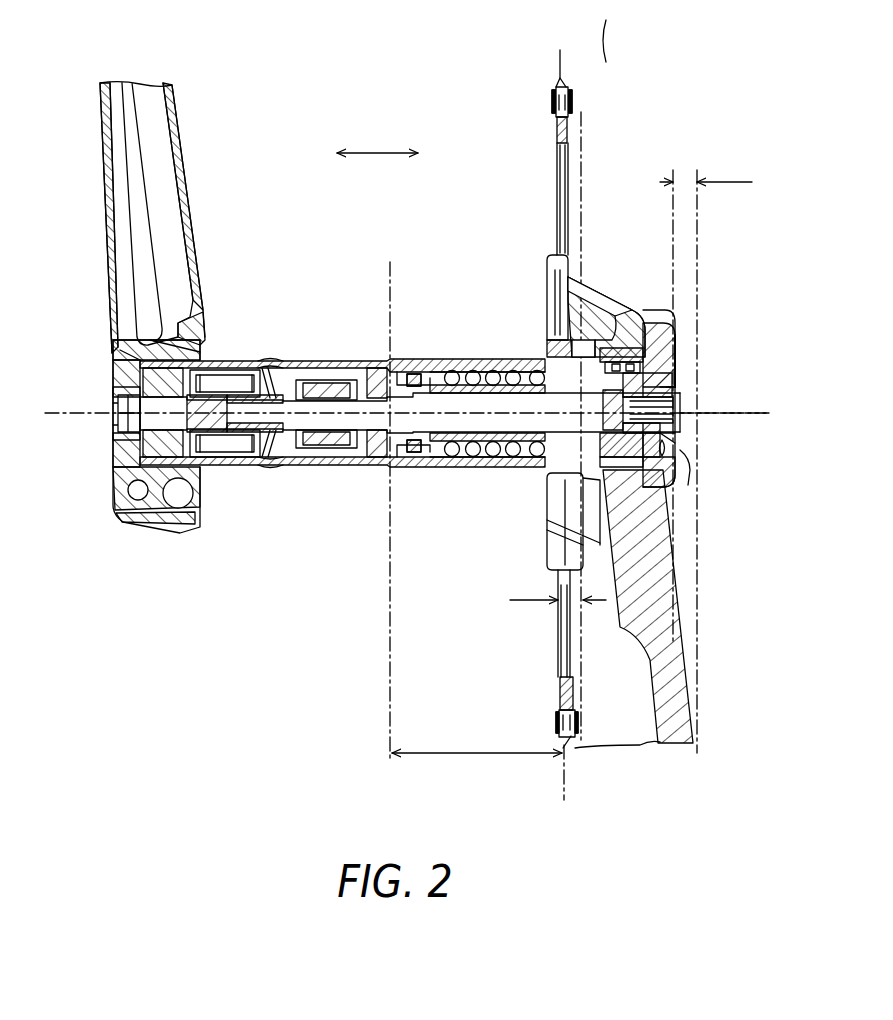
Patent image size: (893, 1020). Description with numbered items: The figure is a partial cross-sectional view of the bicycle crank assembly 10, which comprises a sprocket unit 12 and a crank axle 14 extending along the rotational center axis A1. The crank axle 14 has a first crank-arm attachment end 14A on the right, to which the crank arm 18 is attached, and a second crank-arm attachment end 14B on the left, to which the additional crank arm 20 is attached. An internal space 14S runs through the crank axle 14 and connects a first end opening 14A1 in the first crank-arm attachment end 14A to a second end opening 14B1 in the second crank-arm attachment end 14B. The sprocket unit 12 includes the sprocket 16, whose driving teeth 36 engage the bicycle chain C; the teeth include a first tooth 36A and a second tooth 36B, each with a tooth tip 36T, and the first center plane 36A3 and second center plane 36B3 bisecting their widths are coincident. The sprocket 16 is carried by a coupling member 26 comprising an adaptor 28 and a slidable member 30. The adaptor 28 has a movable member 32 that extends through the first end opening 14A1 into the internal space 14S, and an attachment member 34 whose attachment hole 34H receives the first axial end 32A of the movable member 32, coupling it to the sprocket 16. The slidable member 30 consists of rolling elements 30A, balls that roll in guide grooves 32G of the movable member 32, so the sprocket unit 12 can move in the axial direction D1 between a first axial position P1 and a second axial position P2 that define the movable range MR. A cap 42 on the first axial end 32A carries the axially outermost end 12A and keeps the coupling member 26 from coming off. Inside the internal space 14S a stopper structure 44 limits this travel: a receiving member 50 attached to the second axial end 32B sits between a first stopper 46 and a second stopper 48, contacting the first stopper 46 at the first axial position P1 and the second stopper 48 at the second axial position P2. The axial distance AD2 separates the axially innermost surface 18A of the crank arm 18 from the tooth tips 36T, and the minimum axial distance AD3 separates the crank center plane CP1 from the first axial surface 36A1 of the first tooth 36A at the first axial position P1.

The bicycle crank assembly 10 is at (716, 273).
The sprocket unit 12 is at (548, 152).
The axially outermost end 12A is at (682, 380).
The crank axle 14 is at (294, 360).
The first crank-arm attachment end 14A is at (640, 303).
The first end opening 14A1 is at (646, 370).
The second crank-arm attachment end 14B is at (113, 348).
The second end opening 14B1 is at (140, 386).
The internal space 14S is at (334, 378).
The sprocket 16 is at (556, 195).
The crank arm 18 is at (697, 720).
The axially innermost surface 18A is at (578, 332).
The additional crank arm 20 is at (183, 136).
The coupling member 26 is at (540, 250).
The adaptor 28 is at (531, 369).
The slidable member 30 is at (487, 352).
The rolling elements 30A is at (473, 369).
The movable member 32 is at (428, 362).
The first axial end 32A is at (678, 442).
The second axial end 32B is at (281, 394).
The guide grooves 32G is at (410, 371).
The attachment member 34 is at (523, 303).
The attachment hole 34H is at (668, 450).
The driving teeth 36 is at (575, 100).
The first tooth 36A is at (572, 742).
The first axial surface 36A1 is at (562, 785).
The first center plane 36A3 is at (565, 60).
The second tooth 36B is at (554, 78).
The second center plane 36B3 is at (634, 52).
The tooth tip 36T is at (559, 80).
The cap 42 is at (683, 467).
The stopper structure 44 is at (288, 468).
The first stopper 46 is at (213, 452).
The second stopper 48 is at (353, 450).
The receiving member 50 is at (291, 447).
The rotational center axis A1 is at (708, 413).
The bicycle chain C is at (579, 111).
The crank center plane CP1 is at (388, 260).
The axial direction D1 is at (380, 150).
The first axial position P1 is at (672, 212).
The second axial position P2 is at (702, 218).
The movable range MR is at (714, 171).
The axial distance AD2 is at (558, 588).
The minimum axial distance AD3 is at (477, 738).